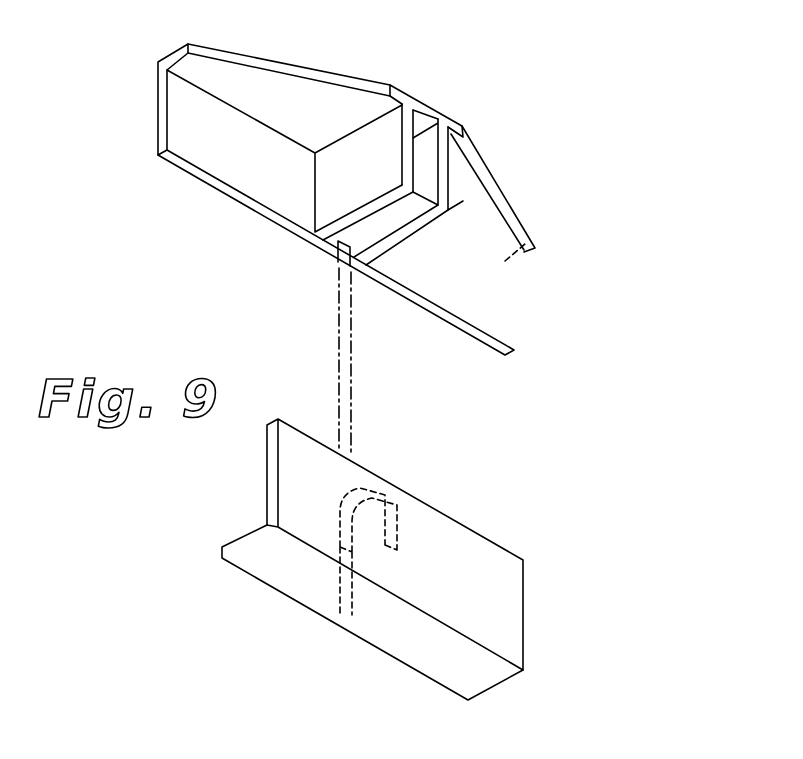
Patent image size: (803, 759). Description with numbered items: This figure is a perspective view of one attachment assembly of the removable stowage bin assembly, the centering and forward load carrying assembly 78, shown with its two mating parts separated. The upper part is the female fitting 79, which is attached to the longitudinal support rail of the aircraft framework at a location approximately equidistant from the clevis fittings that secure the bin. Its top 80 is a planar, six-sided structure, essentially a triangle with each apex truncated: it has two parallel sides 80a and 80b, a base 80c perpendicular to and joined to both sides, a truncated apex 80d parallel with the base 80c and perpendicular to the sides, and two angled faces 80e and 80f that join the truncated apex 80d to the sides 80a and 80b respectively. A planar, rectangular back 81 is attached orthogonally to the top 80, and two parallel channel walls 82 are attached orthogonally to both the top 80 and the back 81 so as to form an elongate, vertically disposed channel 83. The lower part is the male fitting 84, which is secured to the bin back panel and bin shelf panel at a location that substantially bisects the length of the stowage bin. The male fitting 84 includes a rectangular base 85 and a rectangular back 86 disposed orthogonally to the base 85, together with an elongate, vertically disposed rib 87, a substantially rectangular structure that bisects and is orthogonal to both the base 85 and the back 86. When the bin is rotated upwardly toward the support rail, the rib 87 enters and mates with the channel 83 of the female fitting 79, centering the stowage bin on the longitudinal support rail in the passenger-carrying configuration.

The centering and forward load carrying assembly 78 is at (646, 474).
The female fitting 79 is at (233, 229).
The top 80 is at (314, 55).
The side 80a is at (172, 53).
The side 80b is at (516, 246).
The base 80c is at (203, 76).
The truncated apex 80d is at (437, 110).
The angled face 80e is at (340, 73).
The angled face 80f is at (493, 172).
The back 81 is at (180, 112).
The channel walls 82 is at (313, 229).
The channel 83 is at (407, 213).
The male fitting 84 is at (609, 573).
The base 85 is at (402, 633).
The back 86 is at (478, 552).
The rib 87 is at (366, 488).